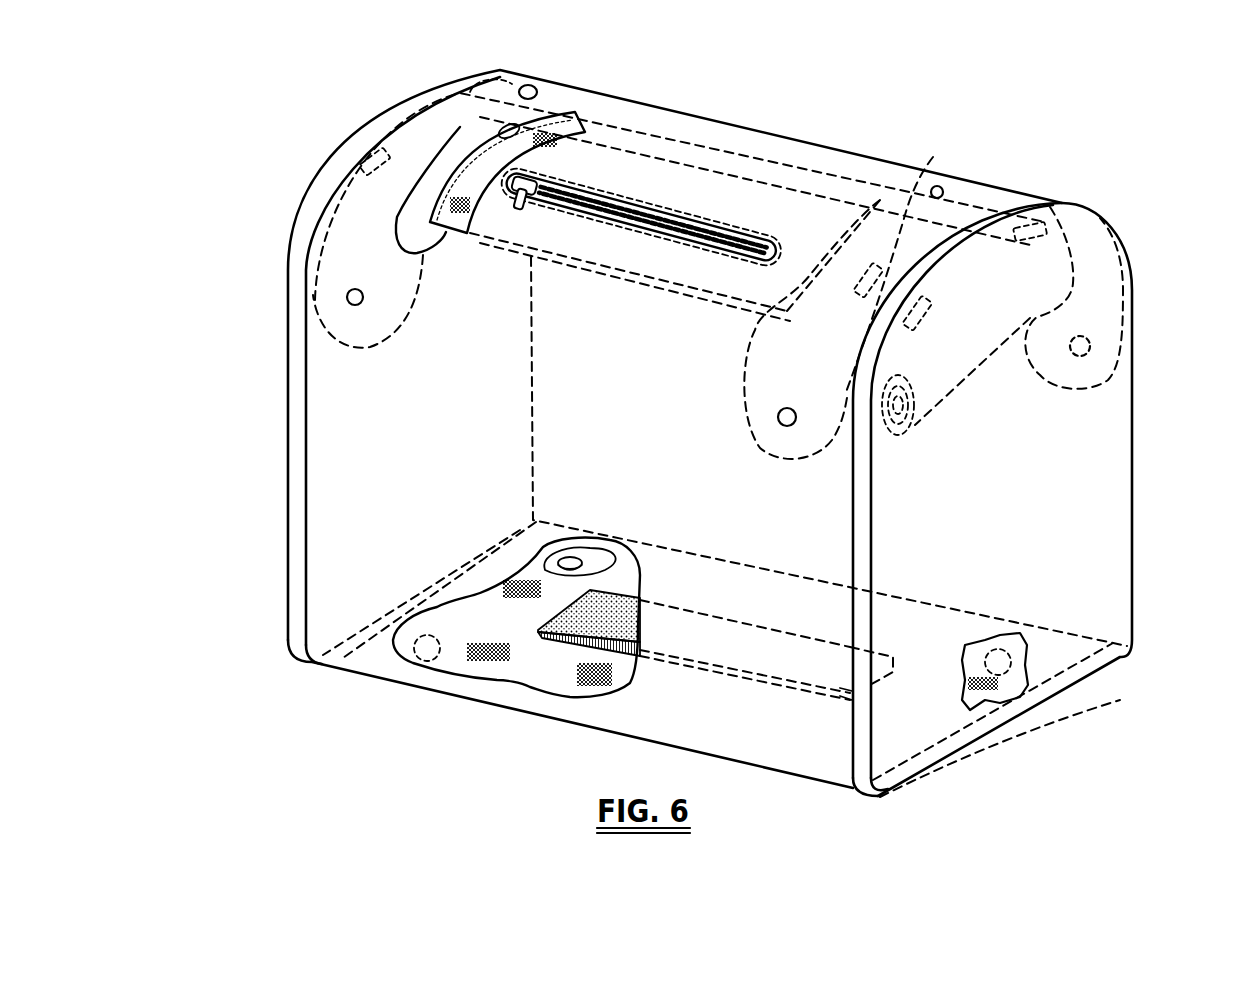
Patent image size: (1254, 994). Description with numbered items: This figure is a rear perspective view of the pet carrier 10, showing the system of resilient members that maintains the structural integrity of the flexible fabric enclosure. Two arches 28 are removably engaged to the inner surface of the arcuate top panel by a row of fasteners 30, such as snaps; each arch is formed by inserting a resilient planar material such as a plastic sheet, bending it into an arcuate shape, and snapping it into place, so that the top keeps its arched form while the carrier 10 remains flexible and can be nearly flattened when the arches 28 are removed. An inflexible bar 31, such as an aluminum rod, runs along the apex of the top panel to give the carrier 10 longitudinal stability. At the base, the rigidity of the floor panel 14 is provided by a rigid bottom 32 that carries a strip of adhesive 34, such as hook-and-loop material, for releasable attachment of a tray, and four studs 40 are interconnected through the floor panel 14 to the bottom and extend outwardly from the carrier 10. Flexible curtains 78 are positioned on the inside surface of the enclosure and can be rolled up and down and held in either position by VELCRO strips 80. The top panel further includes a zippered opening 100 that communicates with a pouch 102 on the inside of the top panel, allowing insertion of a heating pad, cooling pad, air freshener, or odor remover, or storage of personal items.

The pet carrier 10 is at (299, 159).
The floor panel 14 is at (544, 758).
The arches 28 is at (413, 215).
The fasteners 30 is at (530, 90).
The inflexible bar 31 is at (817, 183).
The rigid bottom 32 is at (723, 737).
The strip of adhesive 34 is at (538, 632).
The studs 40 is at (560, 563).
The flexible curtains 78 is at (1065, 260).
The VELCRO strips 80 is at (1043, 217).
The zippered opening 100 is at (677, 213).
The pouch 102 is at (567, 130).